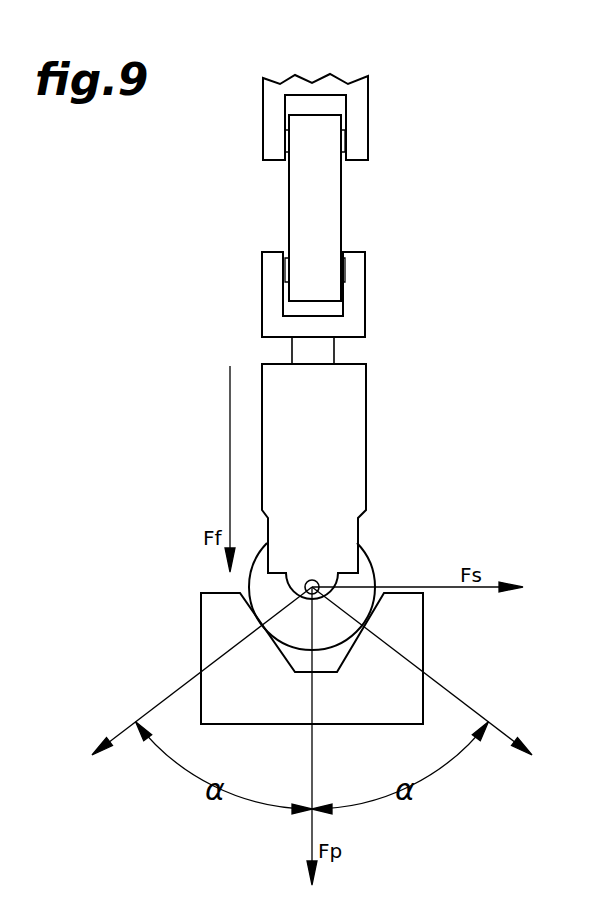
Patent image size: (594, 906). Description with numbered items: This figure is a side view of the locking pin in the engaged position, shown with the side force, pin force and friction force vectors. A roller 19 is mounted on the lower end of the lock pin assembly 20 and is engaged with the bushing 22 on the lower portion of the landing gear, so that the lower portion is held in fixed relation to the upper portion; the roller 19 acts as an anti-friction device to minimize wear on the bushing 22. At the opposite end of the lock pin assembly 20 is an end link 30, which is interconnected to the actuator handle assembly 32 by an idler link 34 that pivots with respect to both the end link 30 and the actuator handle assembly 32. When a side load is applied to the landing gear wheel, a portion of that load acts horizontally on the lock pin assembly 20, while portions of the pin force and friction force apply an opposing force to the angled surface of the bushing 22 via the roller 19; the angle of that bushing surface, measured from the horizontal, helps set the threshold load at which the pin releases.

The roller 19 is at (373, 560).
The lock pin assembly 20 is at (330, 468).
The bushing 22 is at (303, 671).
The end link 30 is at (267, 312).
The actuator handle assembly 32 is at (364, 113).
The idler link 34 is at (330, 218).